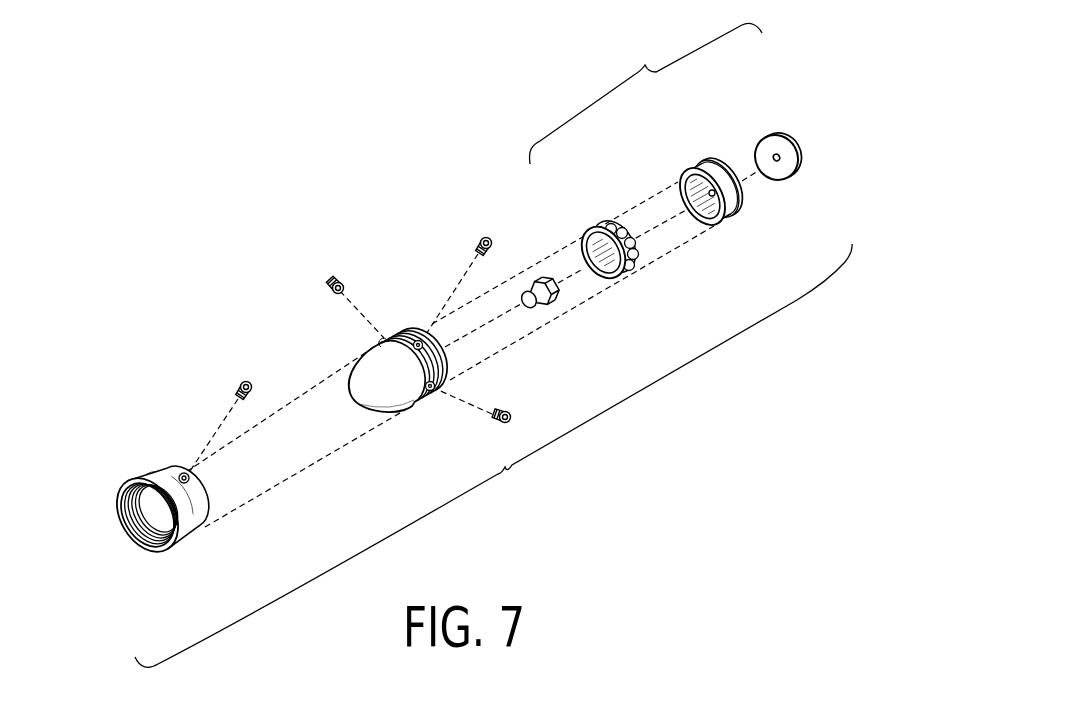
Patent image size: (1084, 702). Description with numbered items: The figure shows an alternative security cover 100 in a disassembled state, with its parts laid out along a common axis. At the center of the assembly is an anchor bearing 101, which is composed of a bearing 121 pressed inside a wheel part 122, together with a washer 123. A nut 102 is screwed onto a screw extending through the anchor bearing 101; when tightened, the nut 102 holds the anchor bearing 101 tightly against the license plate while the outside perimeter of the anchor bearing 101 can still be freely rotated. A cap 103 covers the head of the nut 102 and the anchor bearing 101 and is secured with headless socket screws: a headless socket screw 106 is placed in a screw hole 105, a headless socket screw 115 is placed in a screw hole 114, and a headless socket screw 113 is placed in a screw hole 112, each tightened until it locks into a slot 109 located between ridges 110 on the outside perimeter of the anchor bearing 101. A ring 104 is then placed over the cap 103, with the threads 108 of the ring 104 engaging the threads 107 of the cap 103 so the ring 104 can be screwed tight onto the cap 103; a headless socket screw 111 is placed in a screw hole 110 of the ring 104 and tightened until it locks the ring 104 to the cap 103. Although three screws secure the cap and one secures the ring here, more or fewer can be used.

The security cover 100 is at (493, 455).
The anchor bearing 101 is at (645, 93).
The nut 102 is at (548, 298).
The cap 103 is at (381, 380).
The ring 104 is at (145, 526).
The screw hole 105 is at (416, 340).
The headless socket screw 106 is at (481, 238).
The threads 107 is at (399, 330).
The threads 108 is at (140, 545).
The slot 109 is at (737, 211).
The ridges 110 is at (183, 473).
The headless socket screw 111 is at (240, 384).
The screw hole 112 is at (433, 390).
The headless socket screw 113 is at (501, 411).
The screw hole 114 is at (382, 342).
The headless socket screw 115 is at (329, 280).
The bearing 121 is at (633, 256).
The wheel part 122 is at (670, 157).
The washer 123 is at (789, 141).